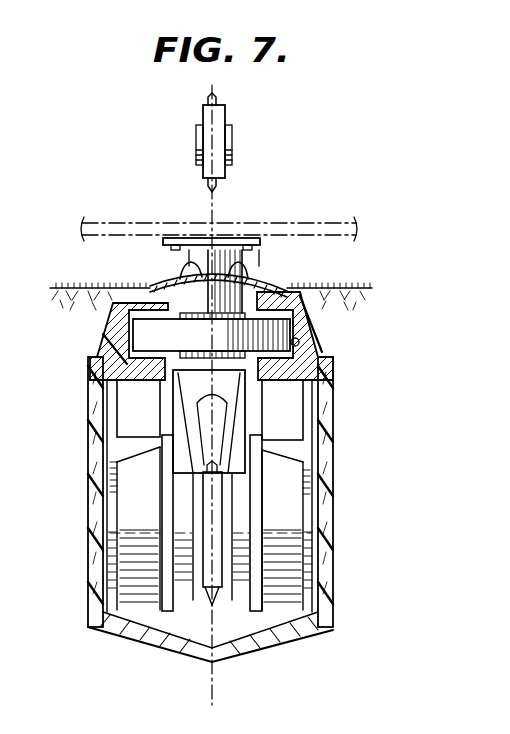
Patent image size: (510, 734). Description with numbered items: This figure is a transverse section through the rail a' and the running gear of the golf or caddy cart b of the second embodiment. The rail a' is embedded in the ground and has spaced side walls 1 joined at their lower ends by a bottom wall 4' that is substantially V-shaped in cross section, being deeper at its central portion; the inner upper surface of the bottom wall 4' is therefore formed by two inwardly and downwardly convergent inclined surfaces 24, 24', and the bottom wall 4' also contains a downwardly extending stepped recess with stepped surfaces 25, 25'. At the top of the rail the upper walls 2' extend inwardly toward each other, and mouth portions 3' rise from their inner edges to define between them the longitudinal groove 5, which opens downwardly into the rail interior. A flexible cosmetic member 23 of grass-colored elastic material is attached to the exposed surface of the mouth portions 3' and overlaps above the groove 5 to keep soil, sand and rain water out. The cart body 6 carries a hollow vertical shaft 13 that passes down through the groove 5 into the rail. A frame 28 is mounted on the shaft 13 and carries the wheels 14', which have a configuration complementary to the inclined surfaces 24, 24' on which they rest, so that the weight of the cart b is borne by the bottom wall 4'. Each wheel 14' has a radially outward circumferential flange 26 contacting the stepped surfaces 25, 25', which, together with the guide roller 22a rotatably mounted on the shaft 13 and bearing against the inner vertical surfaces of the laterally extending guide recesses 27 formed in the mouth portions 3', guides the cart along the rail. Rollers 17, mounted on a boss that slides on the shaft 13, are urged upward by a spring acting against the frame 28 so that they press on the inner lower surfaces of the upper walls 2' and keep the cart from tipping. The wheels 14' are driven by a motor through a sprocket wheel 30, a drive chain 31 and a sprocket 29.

The sprocket wheel 30 is at (203, 113).
The drive chain 31 is at (208, 197).
The golf or caddy cart b is at (108, 214).
The body 6 is at (334, 222).
The flexible cosmetic member 23 is at (281, 288).
The mouth portion 3' is at (162, 269).
The longitudinal groove 5 is at (250, 296).
The guide roller 22a is at (134, 326).
The hollow vertical shaft 13 is at (203, 300).
The guide recess 27 is at (299, 343).
The upper wall 2' is at (188, 336).
The rail a' is at (64, 402).
The roller 17 is at (118, 427).
The frame 28 is at (238, 431).
The sprocket 29 is at (205, 506).
The side wall 1 is at (103, 541).
The inclined surface 24 is at (235, 616).
The inclined surface 24' is at (74, 600).
The wheel 14' is at (213, 649).
The bottom wall 4' is at (107, 667).
The stepped surface 25' is at (145, 666).
The stepped surface 25 is at (292, 667).
The circumferential flange 26 is at (170, 617).